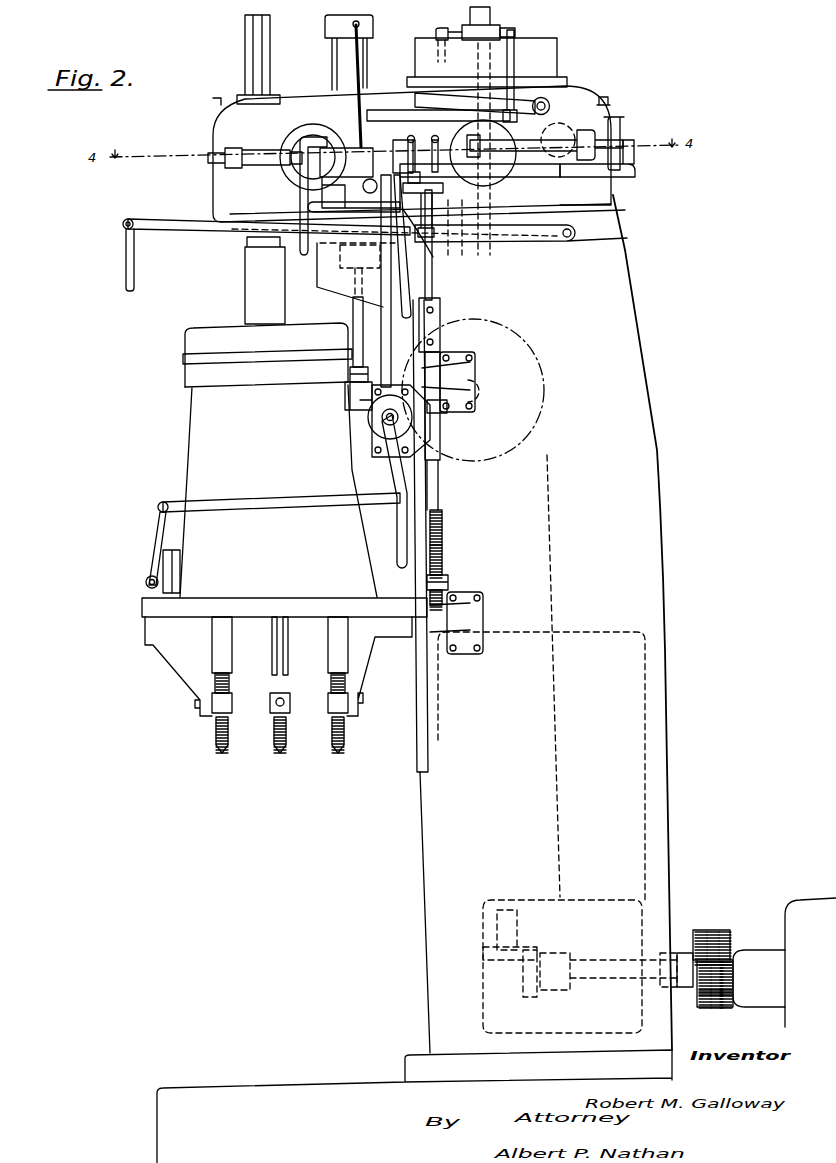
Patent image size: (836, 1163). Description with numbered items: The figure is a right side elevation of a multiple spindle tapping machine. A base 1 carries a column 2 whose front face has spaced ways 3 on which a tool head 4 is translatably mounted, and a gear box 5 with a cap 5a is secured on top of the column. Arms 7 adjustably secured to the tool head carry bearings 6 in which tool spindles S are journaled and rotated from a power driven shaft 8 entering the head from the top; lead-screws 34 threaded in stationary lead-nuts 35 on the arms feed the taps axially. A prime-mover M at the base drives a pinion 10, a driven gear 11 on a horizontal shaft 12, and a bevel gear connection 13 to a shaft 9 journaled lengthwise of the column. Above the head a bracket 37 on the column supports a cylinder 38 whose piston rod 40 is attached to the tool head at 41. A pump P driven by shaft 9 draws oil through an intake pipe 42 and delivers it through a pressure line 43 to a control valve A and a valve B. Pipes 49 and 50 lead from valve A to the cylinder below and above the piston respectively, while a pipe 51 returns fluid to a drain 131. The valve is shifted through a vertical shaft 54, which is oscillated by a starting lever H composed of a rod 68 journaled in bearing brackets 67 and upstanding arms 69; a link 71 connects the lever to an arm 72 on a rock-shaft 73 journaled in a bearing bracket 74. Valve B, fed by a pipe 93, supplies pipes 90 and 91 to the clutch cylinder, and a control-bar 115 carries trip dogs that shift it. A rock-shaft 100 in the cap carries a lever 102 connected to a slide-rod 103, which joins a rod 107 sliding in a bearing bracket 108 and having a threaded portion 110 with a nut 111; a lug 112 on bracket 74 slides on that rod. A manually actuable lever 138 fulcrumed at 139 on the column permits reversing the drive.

The base 1 is at (414, 1106).
The column 2 is at (666, 797).
The ways 3 is at (420, 717).
The tool head 4 is at (190, 452).
The gear box 5 is at (616, 193).
The cap of the gear-box 5a is at (608, 90).
The bearings 6 is at (289, 631).
The arms 7 is at (365, 667).
The power driven shaft 8 is at (245, 52).
The shaft 9 is at (490, 260).
The driving pinion 10 is at (735, 978).
The driven gear 11 is at (720, 931).
The horizontally disposed shaft 12 is at (605, 985).
The bevel gear connection 13 is at (528, 960).
The lead-screws 34 is at (290, 687).
The lead-nuts 35 is at (290, 706).
The bracket 37 is at (338, 297).
The cylinder 38 is at (367, 62).
The rod 40 is at (353, 337).
The attachment of rod to tool head 41 is at (348, 403).
The intake pipe 42 is at (436, 33).
The pressure line 43 is at (515, 60).
The pipe 49 is at (308, 210).
The pipe 50 is at (356, 100).
The pipe 51 is at (307, 195).
The shaft 54 is at (368, 366).
The bearing brackets 67 is at (180, 577).
The rod 68 is at (147, 586).
The upstanding arms 69 is at (155, 541).
The link 71 is at (283, 497).
The arm 72 is at (395, 474).
The rock-shaft 73 is at (372, 433).
The bearing bracket 74 is at (380, 422).
The fluid pressure pipe 90 is at (636, 170).
The fluid pressure pipe 91 is at (621, 124).
The pipe 93 is at (480, 130).
The rock-shaft 100 is at (555, 106).
The lever 102 is at (452, 97).
The slide-rod 103 is at (433, 276).
The rod 107 is at (441, 447).
The bearing bracket 108 is at (483, 614).
The threaded portion 110 is at (443, 550).
The nut 111 is at (449, 582).
The lug 112 is at (441, 428).
The control-bar 115 is at (532, 130).
The drain 131 is at (435, 253).
The manually actuable lever 138 is at (185, 229).
The fulcrum 139 is at (570, 242).
The control valve A is at (360, 178).
The valve B is at (405, 140).
The starting lever H is at (254, 494).
The tool-spindles S is at (280, 685).
The pump P is at (500, 27).
The prime-mover M is at (792, 900).